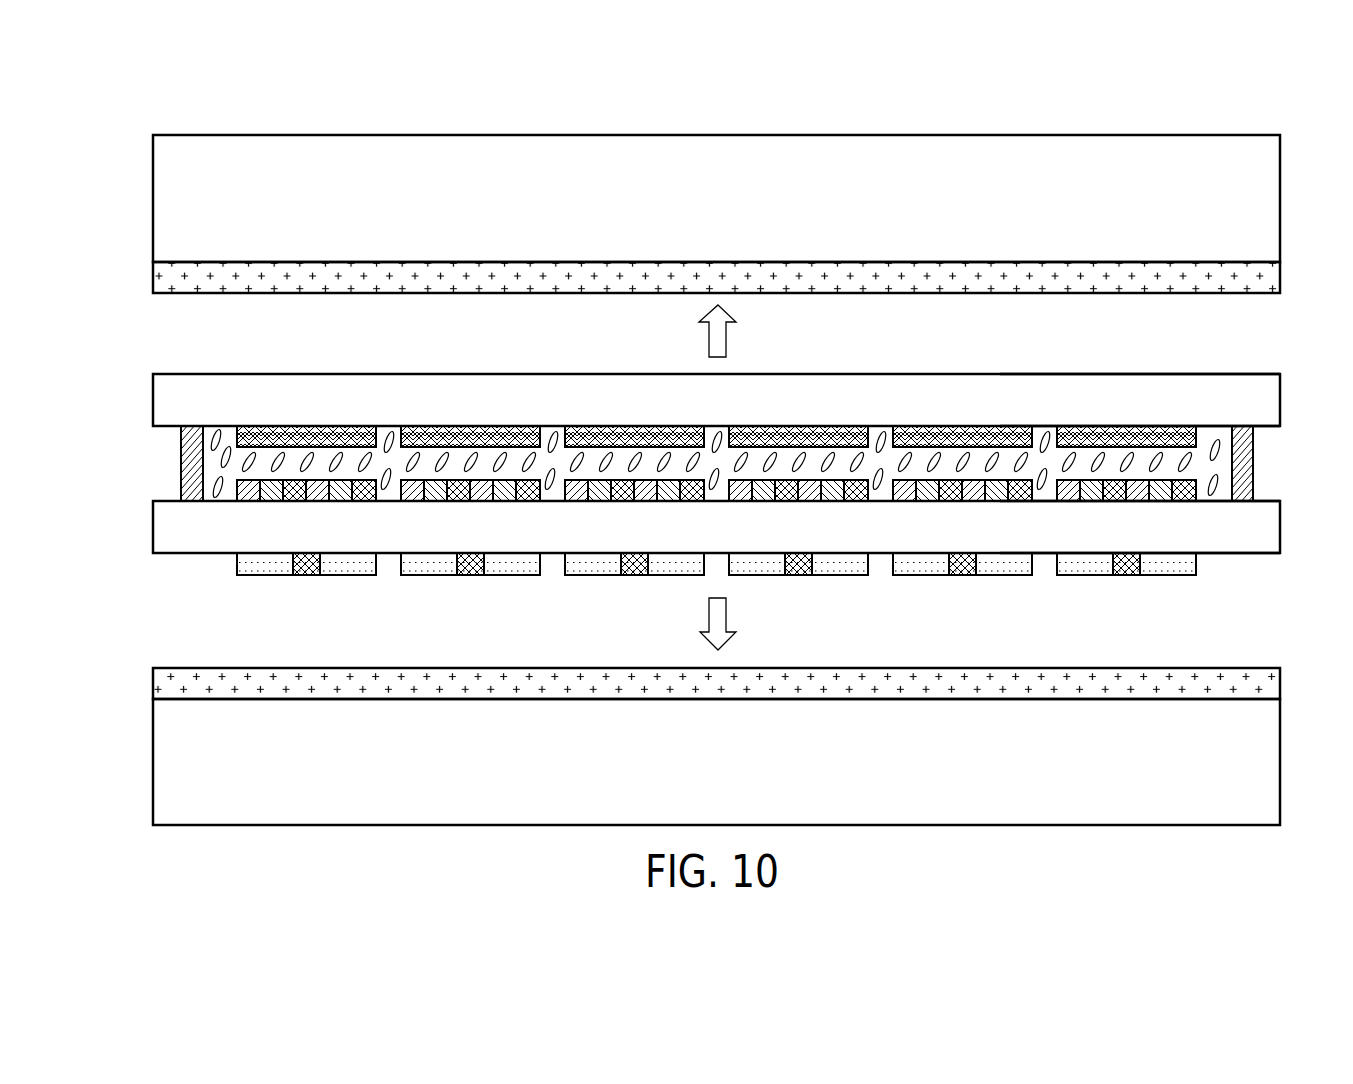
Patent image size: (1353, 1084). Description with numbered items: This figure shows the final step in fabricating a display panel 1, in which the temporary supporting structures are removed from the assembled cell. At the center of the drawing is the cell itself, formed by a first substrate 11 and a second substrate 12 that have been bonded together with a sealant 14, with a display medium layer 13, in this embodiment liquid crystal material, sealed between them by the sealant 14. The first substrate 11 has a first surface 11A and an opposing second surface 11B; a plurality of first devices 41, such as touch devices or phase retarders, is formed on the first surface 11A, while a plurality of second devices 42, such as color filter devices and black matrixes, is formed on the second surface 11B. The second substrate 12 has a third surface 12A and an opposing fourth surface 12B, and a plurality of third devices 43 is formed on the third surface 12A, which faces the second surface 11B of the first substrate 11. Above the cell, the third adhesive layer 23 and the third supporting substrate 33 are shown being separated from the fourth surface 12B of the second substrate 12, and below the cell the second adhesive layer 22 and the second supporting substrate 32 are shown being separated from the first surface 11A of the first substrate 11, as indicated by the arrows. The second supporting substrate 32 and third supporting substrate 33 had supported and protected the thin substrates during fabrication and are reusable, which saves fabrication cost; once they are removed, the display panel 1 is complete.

The display panel 1 is at (1190, 348).
The first substrate 11 is at (721, 541).
The first surface 11A is at (1270, 553).
The second surface 11B is at (1270, 501).
The second substrate 12 is at (722, 406).
The third surface 12A is at (1268, 426).
The fourth surface 12B is at (1253, 374).
The display medium layer 13 is at (217, 439).
The sealant 14 is at (190, 484).
The second adhesive layer 22 is at (170, 687).
The third adhesive layer 23 is at (170, 277).
The second supporting substrate 32 is at (723, 773).
The third supporting substrate 33 is at (724, 219).
The first devices 41 is at (262, 563).
The second devices 42 is at (252, 497).
The third devices 43 is at (320, 435).